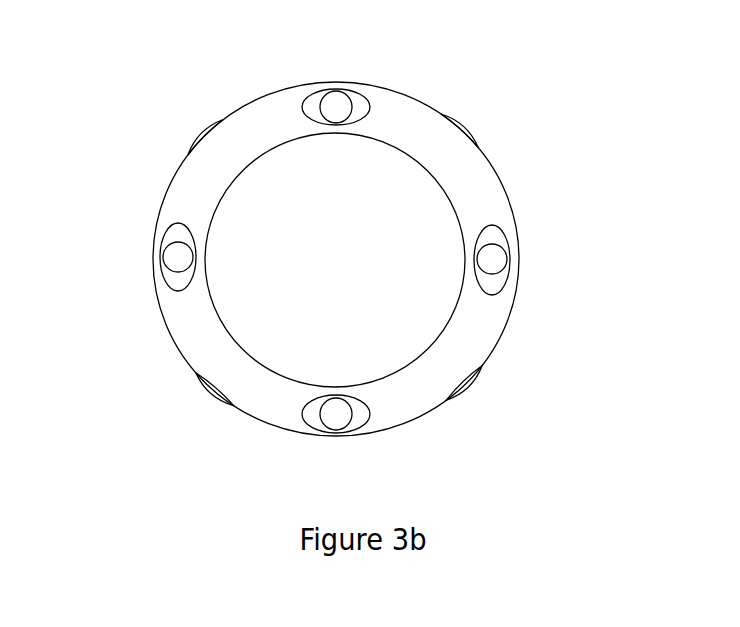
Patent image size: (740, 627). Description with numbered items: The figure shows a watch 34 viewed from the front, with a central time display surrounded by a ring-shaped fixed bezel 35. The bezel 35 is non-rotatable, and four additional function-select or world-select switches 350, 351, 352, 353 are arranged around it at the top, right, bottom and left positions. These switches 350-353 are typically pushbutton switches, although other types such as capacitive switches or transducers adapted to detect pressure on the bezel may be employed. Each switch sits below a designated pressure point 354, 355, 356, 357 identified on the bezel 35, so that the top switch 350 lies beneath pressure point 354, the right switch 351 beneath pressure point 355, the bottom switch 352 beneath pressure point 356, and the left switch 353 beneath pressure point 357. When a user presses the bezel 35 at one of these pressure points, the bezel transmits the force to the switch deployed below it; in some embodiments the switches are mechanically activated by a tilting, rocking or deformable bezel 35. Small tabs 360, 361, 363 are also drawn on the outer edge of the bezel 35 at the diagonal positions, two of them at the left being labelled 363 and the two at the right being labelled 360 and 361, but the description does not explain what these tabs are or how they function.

The watch 34 is at (103, 458).
The fixed bezel 35 is at (487, 187).
The function-select or world-select switch 350 is at (338, 100).
The function-select or world-select switch 351 is at (493, 262).
The function-select or world-select switch 352 is at (335, 420).
The function-select or world-select switch 353 is at (182, 252).
The designated pressure point 354 is at (313, 103).
The designated pressure point 355 is at (487, 282).
The designated pressure point 356 is at (358, 420).
The designated pressure point 357 is at (168, 276).
The upper right attachment tab 360 is at (467, 128).
The lower right attachment tab 361 is at (472, 387).
The left attachment tabs 363 is at (200, 126).